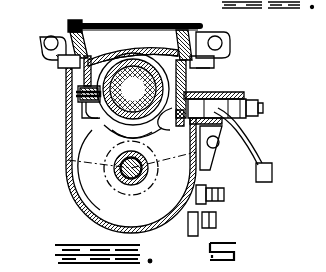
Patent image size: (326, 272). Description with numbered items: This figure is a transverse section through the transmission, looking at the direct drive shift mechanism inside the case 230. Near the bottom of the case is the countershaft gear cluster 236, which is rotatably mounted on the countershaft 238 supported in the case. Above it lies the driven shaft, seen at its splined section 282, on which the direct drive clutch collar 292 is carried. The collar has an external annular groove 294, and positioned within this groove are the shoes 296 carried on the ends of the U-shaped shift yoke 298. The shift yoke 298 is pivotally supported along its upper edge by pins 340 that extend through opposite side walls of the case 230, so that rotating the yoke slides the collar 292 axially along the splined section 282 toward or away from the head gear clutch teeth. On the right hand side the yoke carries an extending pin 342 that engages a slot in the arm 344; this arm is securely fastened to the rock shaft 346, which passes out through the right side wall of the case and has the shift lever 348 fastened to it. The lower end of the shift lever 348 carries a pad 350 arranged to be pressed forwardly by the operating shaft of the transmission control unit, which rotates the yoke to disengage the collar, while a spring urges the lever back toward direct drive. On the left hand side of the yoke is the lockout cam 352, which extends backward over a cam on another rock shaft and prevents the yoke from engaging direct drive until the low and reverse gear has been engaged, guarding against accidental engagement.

The transmission case 230 is at (90, 214).
The countershaft gear cluster 236 is at (118, 154).
The countershaft 238 is at (128, 185).
The splined section 282 is at (133, 89).
The clutch collar 292 is at (148, 145).
The external annular groove 294 is at (100, 116).
The shoes 296 is at (78, 95).
The shift yoke 298 is at (170, 23).
The pins 340 is at (118, 10).
The extending pin 342 is at (200, 78).
The arm 344 is at (176, 124).
The rock shaft 346 is at (212, 181).
The shift lever 348 is at (256, 150).
The pad 350 is at (273, 168).
The lockout cam 352 is at (62, 70).